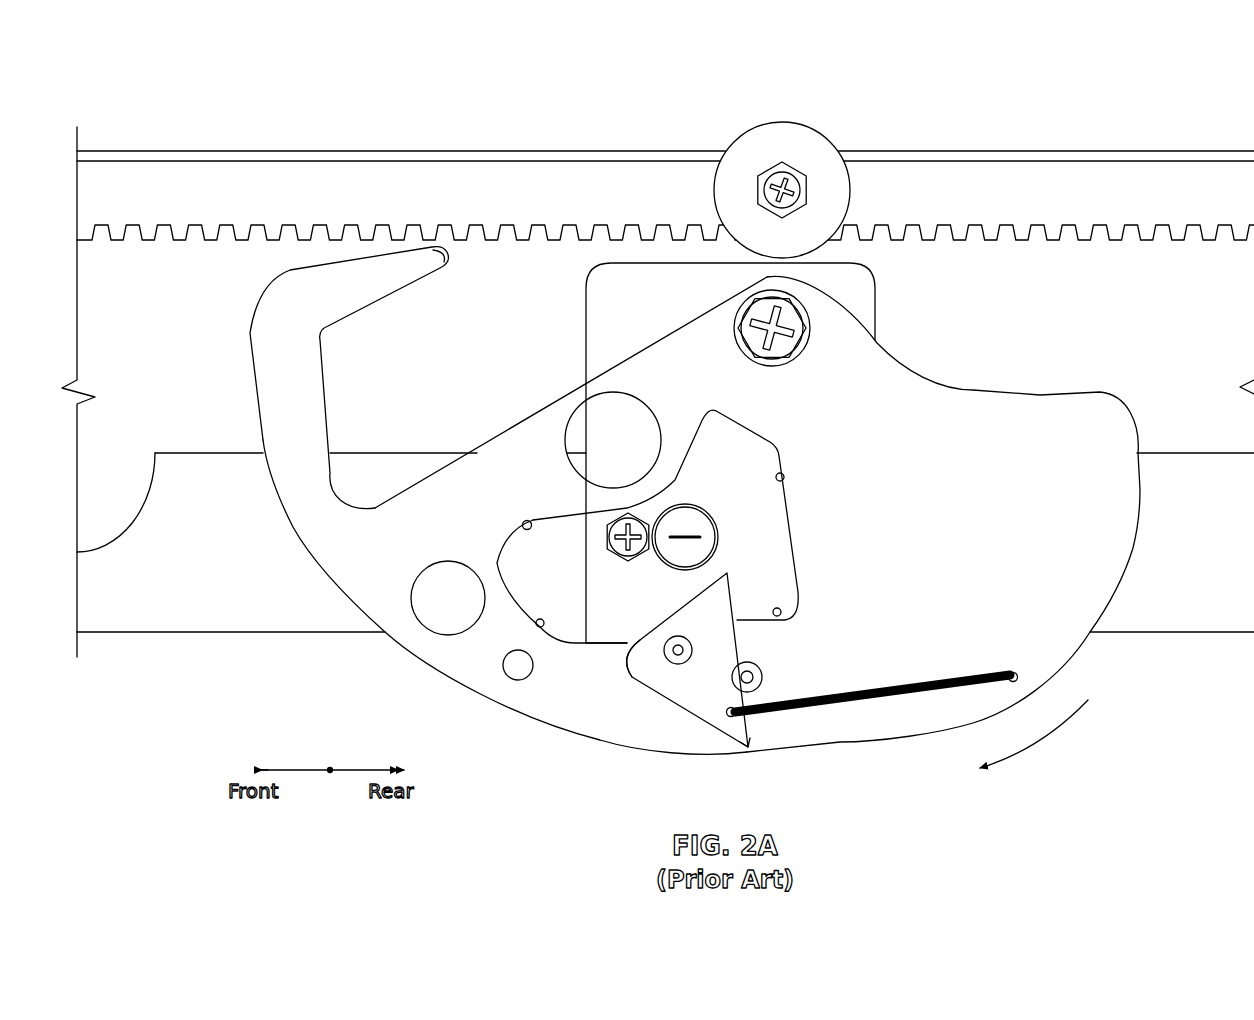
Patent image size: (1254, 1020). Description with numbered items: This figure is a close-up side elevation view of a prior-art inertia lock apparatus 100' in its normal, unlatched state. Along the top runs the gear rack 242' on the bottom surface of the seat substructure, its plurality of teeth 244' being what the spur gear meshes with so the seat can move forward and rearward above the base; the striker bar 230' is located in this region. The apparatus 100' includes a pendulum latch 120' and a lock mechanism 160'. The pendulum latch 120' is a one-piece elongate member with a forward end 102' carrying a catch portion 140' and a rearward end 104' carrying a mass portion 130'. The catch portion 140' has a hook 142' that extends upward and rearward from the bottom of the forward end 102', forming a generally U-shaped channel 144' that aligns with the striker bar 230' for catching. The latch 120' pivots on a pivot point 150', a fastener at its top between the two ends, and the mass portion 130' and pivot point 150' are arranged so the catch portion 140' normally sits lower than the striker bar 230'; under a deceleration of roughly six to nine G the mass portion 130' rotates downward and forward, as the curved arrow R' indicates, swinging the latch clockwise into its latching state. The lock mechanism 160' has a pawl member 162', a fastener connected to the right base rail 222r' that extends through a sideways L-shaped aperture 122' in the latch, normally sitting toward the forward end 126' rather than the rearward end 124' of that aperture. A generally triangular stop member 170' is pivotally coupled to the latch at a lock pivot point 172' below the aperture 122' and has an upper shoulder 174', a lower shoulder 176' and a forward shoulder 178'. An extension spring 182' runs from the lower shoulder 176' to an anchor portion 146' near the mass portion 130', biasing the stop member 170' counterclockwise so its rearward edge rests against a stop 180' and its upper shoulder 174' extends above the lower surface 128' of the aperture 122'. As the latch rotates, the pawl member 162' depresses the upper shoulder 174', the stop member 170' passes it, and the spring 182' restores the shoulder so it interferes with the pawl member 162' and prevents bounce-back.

The inertia lock apparatus 100' is at (658, 377).
The forward end 102' is at (514, 445).
The rearward end 104' is at (987, 514).
The pendulum latch 120' is at (515, 515).
The aperture 122' is at (510, 503).
The rearward end of aperture 124' is at (818, 488).
The forward end of aperture 126' is at (503, 634).
The lower surface of aperture 128' is at (817, 625).
The mass portion 130' is at (979, 514).
The catch portion 140' is at (324, 380).
The hook 142' is at (472, 273).
The U-shaped channel 144' is at (666, 453).
The anchor portion 146' is at (1035, 641).
The pivot point 150' is at (800, 335).
The lock mechanism 160' is at (667, 530).
The pawl member 162' is at (591, 545).
The stop member 170' is at (703, 687).
The lock pivot point 172' is at (697, 631).
The upper shoulder 174' is at (710, 538).
The lower shoulder 176' is at (764, 769).
The forward shoulder 178' is at (600, 671).
The stop 180' is at (789, 670).
The extension spring 182' is at (894, 690).
The right base rail 222r' is at (231, 652).
The striker bar 230' is at (782, 175).
The gear rack 242' is at (665, 146).
The teeth 244' is at (665, 261).
The curved arrow R' is at (1034, 734).